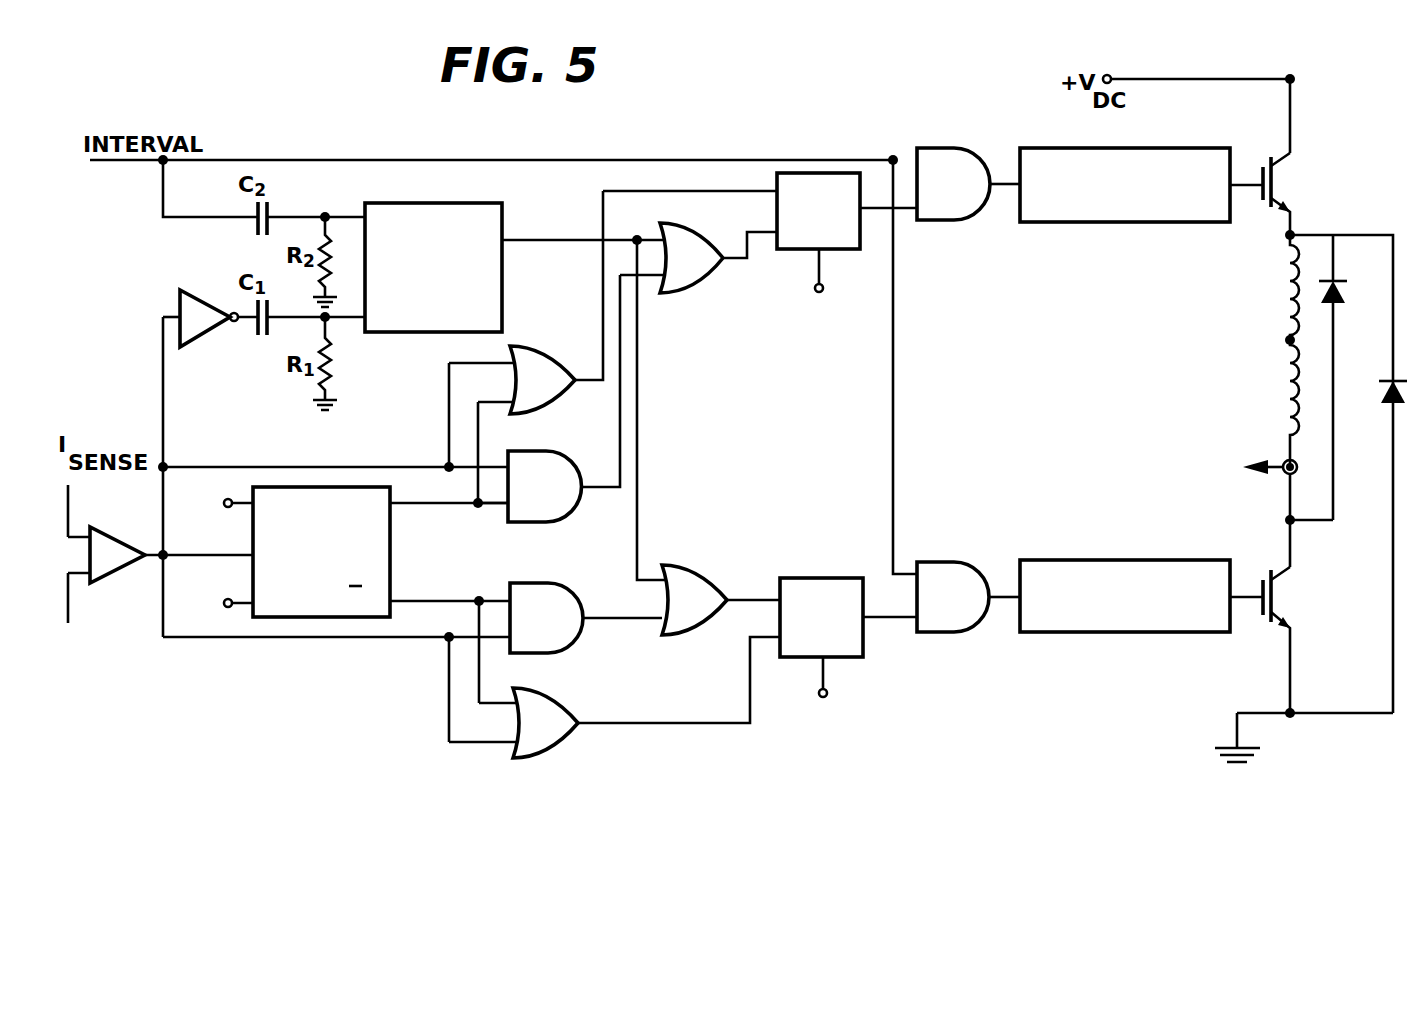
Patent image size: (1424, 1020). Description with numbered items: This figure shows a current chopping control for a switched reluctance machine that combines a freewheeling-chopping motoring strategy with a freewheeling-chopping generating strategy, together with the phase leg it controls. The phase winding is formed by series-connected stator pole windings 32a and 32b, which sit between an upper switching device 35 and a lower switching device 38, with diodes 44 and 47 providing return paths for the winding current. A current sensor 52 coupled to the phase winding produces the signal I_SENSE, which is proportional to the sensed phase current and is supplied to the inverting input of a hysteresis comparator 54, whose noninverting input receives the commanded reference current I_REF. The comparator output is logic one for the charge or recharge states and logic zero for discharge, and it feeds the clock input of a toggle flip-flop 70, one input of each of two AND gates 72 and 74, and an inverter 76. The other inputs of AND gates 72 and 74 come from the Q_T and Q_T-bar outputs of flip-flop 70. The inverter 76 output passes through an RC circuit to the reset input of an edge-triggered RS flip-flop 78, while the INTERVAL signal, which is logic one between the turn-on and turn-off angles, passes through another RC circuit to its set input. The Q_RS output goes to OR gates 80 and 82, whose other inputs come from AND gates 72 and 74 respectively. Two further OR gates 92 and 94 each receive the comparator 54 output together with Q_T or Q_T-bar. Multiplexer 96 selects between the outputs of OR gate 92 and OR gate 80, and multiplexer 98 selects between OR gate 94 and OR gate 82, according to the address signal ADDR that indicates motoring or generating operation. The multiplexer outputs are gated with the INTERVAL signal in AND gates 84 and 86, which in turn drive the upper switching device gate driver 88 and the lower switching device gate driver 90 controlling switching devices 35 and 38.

The upper switching device 35 is at (1278, 165).
The lower switching device 38 is at (1283, 580).
The stator pole winding 32a is at (1290, 272).
The stator pole winding 32b is at (1290, 378).
The diode 44 is at (1340, 282).
The diode 47 is at (1390, 380).
The current sensor 52 is at (1280, 460).
The hysteresis comparator 54 is at (118, 572).
The toggle flip-flop 70 is at (412, 538).
The AND gate 72 is at (550, 452).
The AND gate 74 is at (548, 584).
The inverter 76 is at (197, 348).
The RS flip-flop 78 is at (502, 205).
The OR gate 80 is at (710, 244).
The OR gate 82 is at (706, 582).
The AND gate 84 is at (940, 148).
The AND gate 86 is at (936, 562).
The upper switching device gate driver 88 is at (1107, 223).
The lower switching device gate driver 90 is at (1110, 633).
The OR gate 92 is at (548, 348).
The OR gate 94 is at (562, 672).
The multiplexer 96 is at (862, 250).
The multiplexer 98 is at (806, 582).